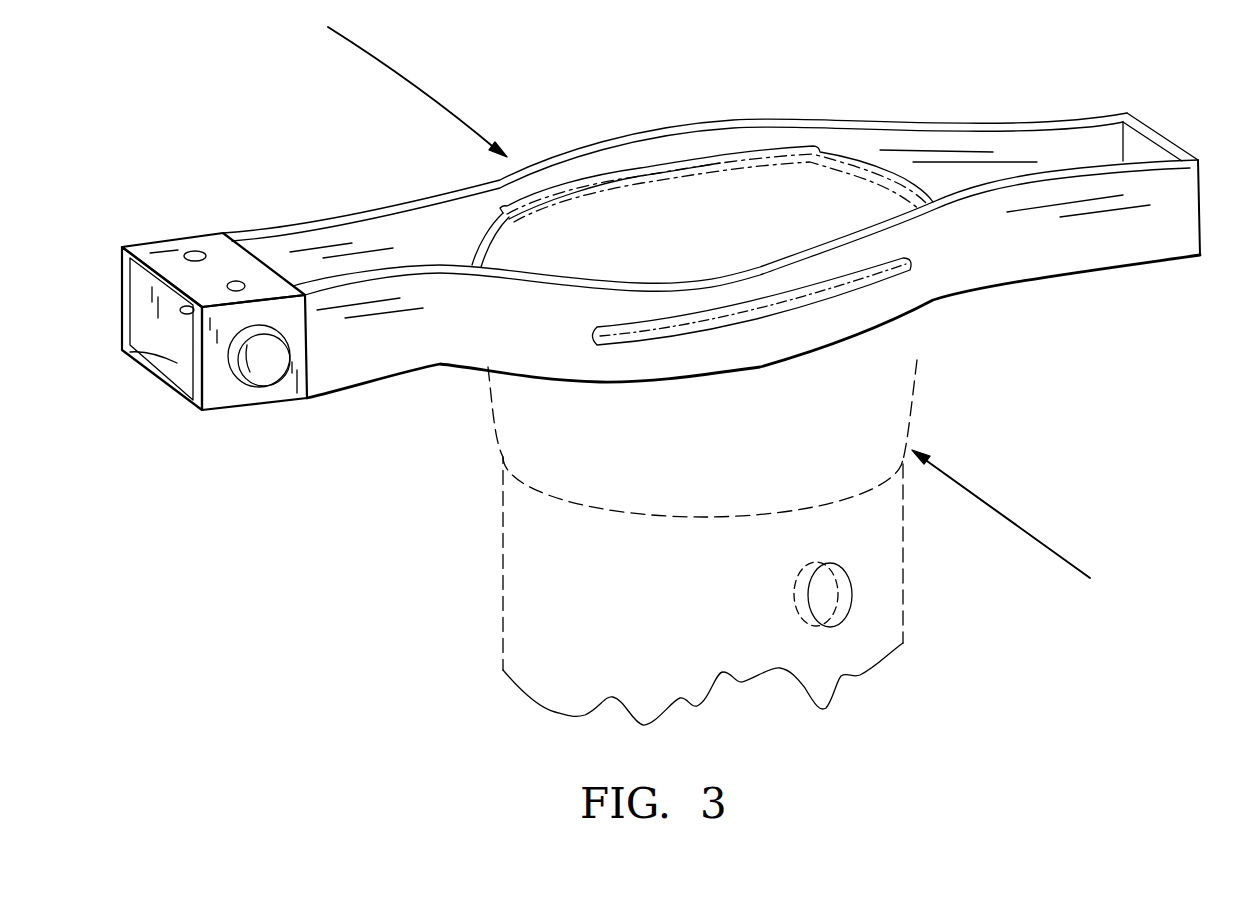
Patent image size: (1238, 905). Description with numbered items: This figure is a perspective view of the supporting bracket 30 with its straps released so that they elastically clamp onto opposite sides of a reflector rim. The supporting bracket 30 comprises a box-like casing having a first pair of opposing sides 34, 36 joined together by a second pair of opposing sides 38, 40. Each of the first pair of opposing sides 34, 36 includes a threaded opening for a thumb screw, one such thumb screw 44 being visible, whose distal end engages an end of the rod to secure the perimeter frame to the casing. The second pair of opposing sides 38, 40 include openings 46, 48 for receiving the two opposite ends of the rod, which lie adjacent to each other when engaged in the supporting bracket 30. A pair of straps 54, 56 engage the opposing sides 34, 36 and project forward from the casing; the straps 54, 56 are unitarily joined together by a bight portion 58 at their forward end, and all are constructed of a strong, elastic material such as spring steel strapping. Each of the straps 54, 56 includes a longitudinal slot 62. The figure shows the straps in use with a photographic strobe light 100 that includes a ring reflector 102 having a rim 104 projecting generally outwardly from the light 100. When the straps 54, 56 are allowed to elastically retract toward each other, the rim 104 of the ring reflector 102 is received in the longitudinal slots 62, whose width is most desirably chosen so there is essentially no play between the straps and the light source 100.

The supporting bracket 30 is at (176, 458).
The first opposing side 34 is at (122, 293).
The first opposing side 36 is at (290, 396).
The second opposing side 38 is at (181, 238).
The second opposing side 40 is at (148, 353).
The thumb screw 44 is at (264, 366).
The opening 46 is at (198, 250).
The opening 48 is at (236, 281).
The strap 54 is at (880, 134).
The strap 56 is at (424, 347).
The bight portion 58 is at (1145, 125).
The longitudinal slot 62 is at (622, 168).
The photographic strobe light 100 is at (885, 568).
The ring reflector 102 is at (522, 433).
The rim 104 is at (734, 157).